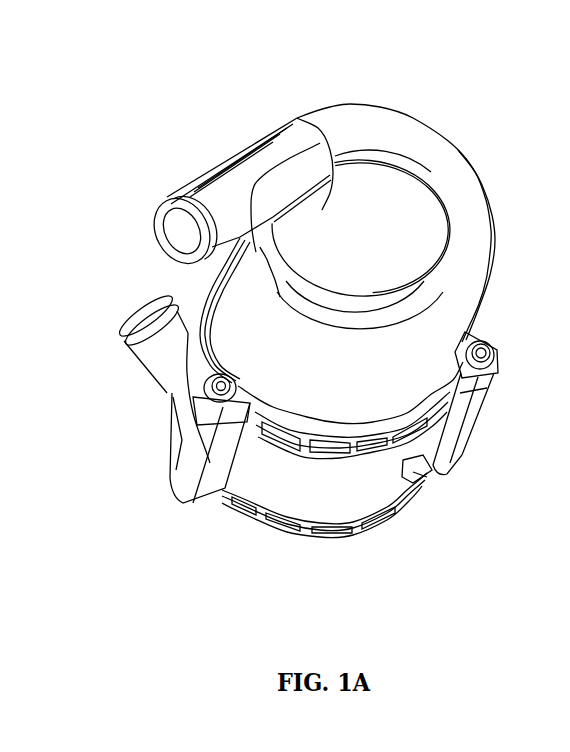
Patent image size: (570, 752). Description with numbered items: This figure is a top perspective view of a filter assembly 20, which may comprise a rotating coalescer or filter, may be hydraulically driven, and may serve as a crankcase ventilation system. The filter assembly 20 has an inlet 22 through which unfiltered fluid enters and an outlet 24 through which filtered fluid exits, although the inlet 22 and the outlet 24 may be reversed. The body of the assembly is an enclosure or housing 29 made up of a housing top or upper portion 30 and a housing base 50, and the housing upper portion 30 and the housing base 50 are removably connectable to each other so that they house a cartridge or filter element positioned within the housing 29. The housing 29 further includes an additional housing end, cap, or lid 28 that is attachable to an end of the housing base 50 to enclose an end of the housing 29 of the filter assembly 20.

The filter assembly 20 is at (284, 80).
The inlet 22 is at (130, 304).
The outlet 24 is at (157, 235).
The lid 28 is at (343, 532).
The housing 29 is at (477, 169).
The housing upper portion 30 is at (479, 301).
The housing base 50 is at (483, 413).